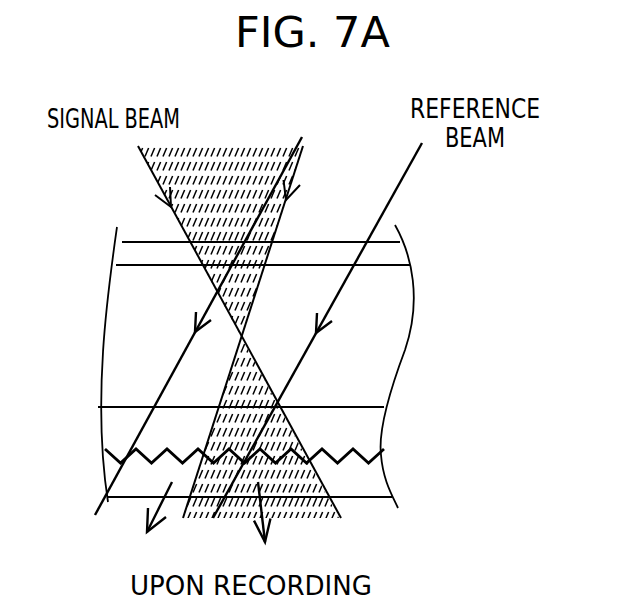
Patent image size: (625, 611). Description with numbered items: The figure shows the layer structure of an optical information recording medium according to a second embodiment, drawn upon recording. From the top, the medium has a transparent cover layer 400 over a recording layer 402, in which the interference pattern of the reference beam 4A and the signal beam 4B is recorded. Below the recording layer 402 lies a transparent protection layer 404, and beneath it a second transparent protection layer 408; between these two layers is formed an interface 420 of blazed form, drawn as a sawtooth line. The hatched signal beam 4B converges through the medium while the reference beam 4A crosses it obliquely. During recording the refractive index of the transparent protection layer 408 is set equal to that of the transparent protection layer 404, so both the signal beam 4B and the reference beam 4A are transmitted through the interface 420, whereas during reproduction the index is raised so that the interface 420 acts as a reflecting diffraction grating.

The transparent cover layer 400 is at (396, 257).
The recording layer 402 is at (392, 347).
The transparent protection layer 404 is at (370, 420).
The interface 420 is at (384, 450).
The transparent protection layer 408 is at (368, 488).
The reference beam 4A is at (338, 167).
The signal beam 4B is at (239, 167).